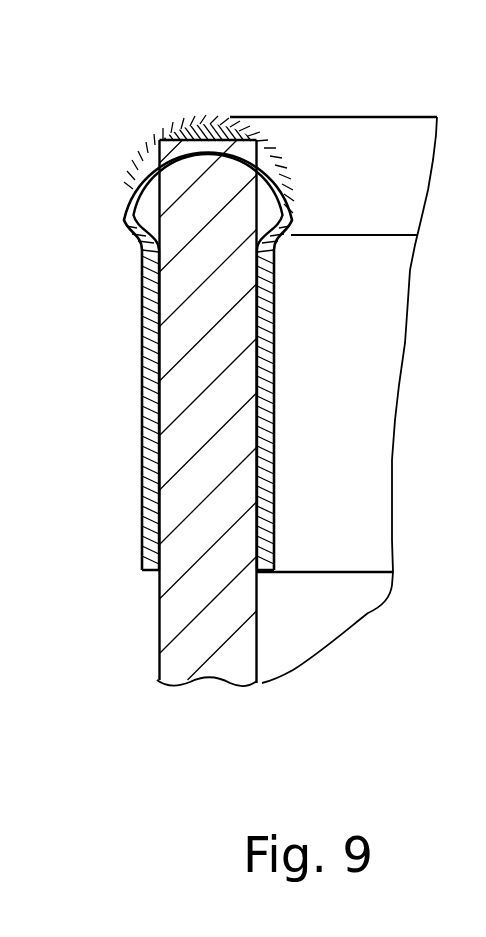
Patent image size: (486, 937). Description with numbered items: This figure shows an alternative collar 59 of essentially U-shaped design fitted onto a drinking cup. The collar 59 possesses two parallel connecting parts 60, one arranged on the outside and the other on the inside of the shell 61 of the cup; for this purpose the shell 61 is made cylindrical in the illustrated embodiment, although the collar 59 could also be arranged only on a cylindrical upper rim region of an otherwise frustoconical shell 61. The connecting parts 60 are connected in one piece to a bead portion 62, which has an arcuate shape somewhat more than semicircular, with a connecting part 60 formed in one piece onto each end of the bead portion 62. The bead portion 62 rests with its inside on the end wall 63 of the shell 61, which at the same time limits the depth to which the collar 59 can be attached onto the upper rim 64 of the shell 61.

The collar 59 is at (217, 108).
The connecting parts 60 is at (152, 405).
The shell 61 is at (171, 613).
The bead portion 62 is at (182, 117).
The end wall 63 is at (237, 117).
The upper rim 64 is at (177, 175).